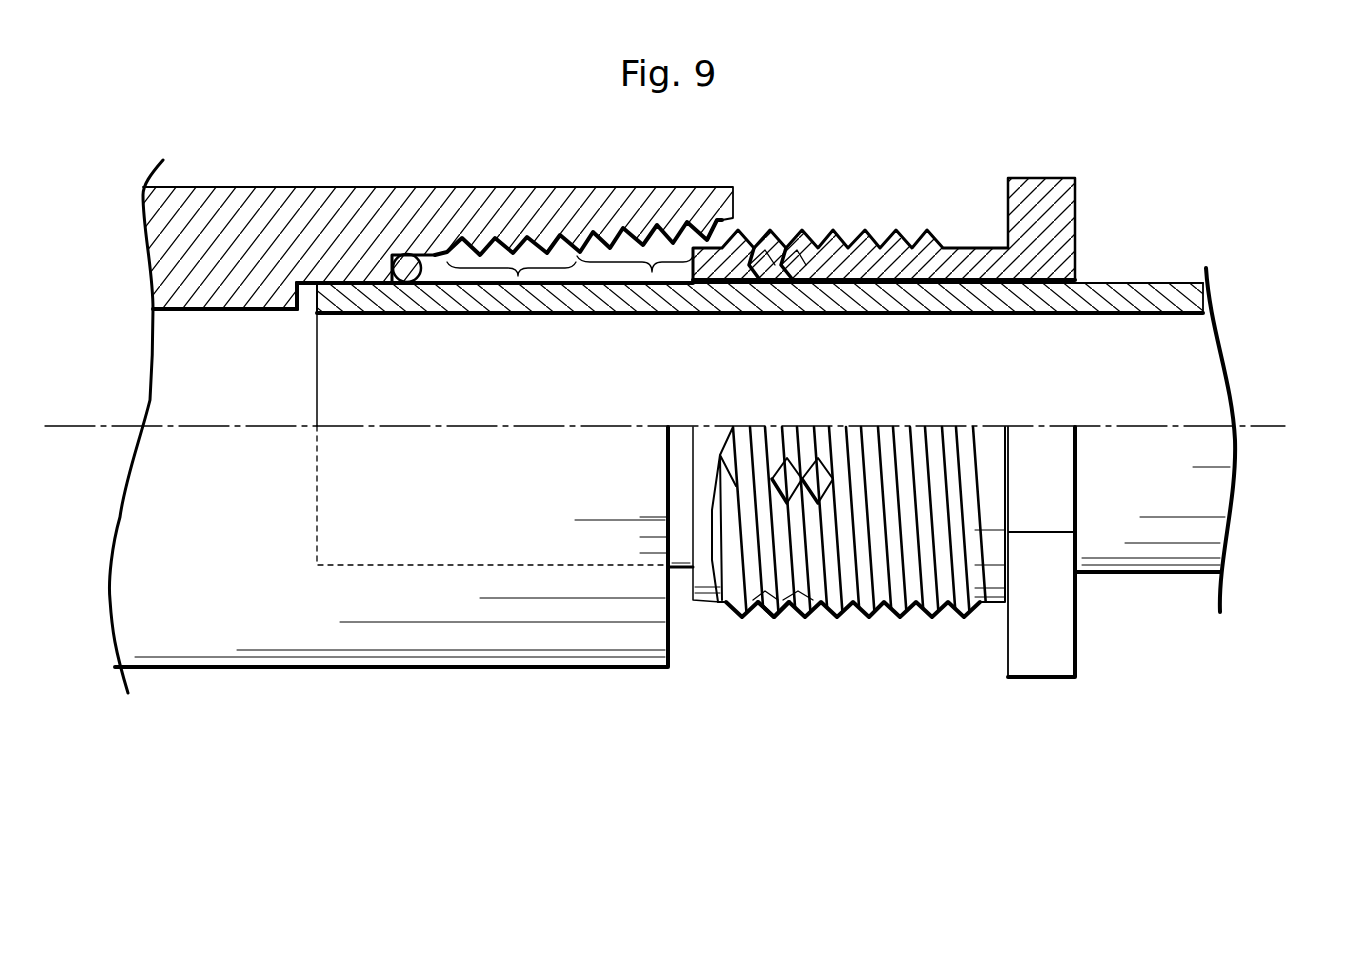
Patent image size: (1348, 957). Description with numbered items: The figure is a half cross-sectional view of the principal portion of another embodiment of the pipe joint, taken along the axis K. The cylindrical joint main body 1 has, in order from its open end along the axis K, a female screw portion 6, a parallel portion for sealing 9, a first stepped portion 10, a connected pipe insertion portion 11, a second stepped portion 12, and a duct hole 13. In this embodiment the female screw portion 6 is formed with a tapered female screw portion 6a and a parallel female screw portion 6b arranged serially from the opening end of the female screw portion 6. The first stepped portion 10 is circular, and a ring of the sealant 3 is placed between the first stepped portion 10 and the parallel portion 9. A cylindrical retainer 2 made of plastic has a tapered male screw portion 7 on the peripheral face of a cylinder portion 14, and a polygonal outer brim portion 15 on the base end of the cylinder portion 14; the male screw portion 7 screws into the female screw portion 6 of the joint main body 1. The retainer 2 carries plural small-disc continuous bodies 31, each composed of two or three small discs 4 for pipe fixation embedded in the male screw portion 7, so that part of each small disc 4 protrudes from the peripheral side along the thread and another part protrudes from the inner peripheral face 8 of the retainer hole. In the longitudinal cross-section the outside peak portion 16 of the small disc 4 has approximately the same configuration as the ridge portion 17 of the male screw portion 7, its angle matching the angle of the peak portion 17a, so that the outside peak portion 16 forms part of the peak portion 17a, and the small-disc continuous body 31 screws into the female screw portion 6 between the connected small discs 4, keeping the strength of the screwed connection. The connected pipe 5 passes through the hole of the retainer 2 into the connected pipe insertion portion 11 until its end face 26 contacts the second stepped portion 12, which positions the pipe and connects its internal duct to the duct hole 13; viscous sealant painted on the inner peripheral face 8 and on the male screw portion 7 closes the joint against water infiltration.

The joint main body 1 is at (421, 372).
The retainer 2 is at (675, 509).
The sealant 3 is at (430, 280).
The small disc 4 is at (792, 285).
The connected pipe 5 is at (1131, 277).
The female screw portion 6 is at (570, 341).
The tapered female screw portion 6a is at (635, 316).
The parallel female screw portion 6b is at (518, 276).
The male screw portion 7 is at (895, 246).
The inner peripheral face 8 is at (750, 304).
The parallel portion for sealing 9 is at (441, 252).
The first stepped portion 10 is at (405, 287).
The connected pipe insertion portion 11 is at (345, 315).
The second stepped portion 12 is at (300, 312).
The duct hole 13 is at (205, 313).
The cylinder portion 14 is at (925, 258).
The polygonal outer brim portion 15 is at (1040, 178).
The outside peak portion 16 is at (766, 617).
The ridge portion 17 is at (730, 612).
The peak portion 17a is at (830, 617).
The end face 26 is at (316, 282).
The small-disc continuous body 31 is at (735, 352).
The axis K is at (1278, 422).